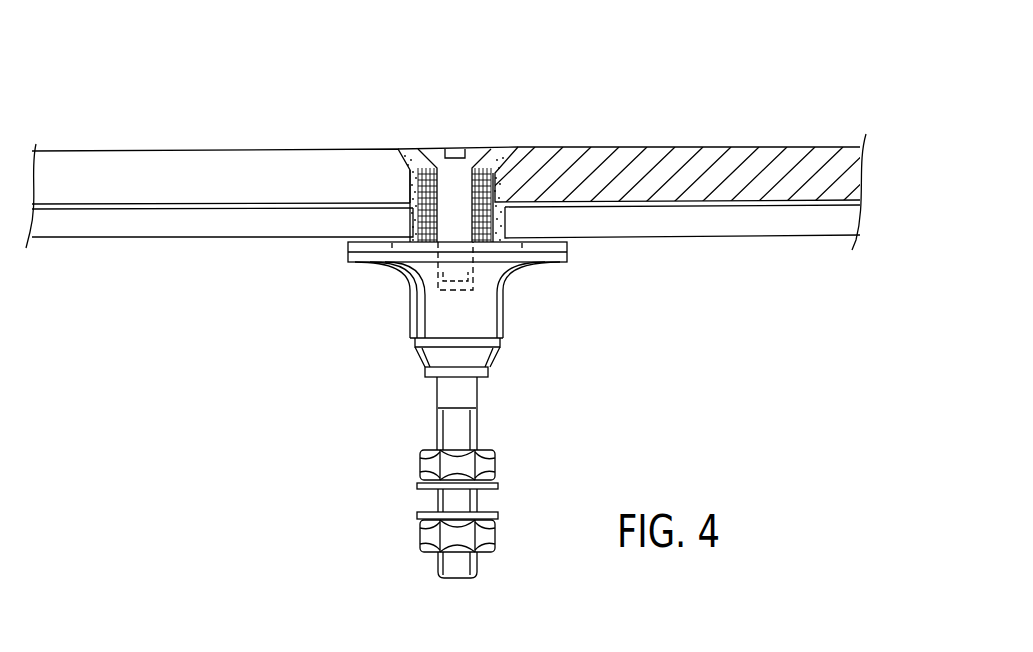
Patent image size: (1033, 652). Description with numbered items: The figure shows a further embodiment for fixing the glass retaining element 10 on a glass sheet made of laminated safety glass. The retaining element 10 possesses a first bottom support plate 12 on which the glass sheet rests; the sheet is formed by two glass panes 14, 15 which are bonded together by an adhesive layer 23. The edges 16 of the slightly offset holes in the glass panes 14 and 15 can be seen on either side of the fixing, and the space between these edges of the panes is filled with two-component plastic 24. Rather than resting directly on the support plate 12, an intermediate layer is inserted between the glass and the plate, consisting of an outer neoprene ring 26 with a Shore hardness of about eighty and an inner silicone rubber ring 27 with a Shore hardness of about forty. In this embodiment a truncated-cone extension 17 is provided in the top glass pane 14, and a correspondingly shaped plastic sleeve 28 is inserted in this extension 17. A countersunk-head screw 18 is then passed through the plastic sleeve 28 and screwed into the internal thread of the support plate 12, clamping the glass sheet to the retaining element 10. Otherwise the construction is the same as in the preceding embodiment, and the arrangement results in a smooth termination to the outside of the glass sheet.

The glass retaining element 10 is at (452, 414).
The first bottom support plate 12 is at (494, 222).
The top glass pane 14 is at (122, 170).
The glass pane 15 is at (134, 227).
The edges of the holes 16 is at (407, 182).
The truncated-cone extension 17 is at (534, 152).
The countersunk-head screw 18 is at (470, 148).
The adhesive layer 23 is at (237, 204).
The two-component plastic 24 is at (425, 188).
The outer neoprene ring 26 is at (363, 245).
The inner silicone rubber ring 27 is at (488, 250).
The plastic sleeve 28 is at (485, 248).